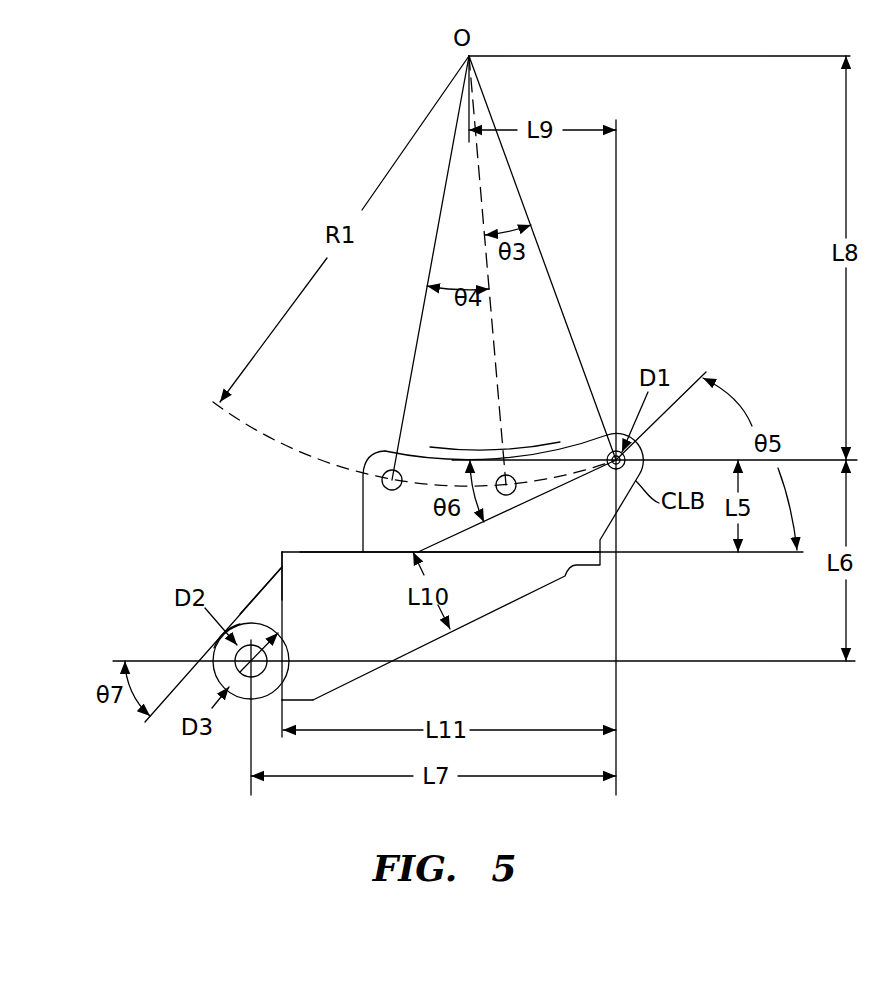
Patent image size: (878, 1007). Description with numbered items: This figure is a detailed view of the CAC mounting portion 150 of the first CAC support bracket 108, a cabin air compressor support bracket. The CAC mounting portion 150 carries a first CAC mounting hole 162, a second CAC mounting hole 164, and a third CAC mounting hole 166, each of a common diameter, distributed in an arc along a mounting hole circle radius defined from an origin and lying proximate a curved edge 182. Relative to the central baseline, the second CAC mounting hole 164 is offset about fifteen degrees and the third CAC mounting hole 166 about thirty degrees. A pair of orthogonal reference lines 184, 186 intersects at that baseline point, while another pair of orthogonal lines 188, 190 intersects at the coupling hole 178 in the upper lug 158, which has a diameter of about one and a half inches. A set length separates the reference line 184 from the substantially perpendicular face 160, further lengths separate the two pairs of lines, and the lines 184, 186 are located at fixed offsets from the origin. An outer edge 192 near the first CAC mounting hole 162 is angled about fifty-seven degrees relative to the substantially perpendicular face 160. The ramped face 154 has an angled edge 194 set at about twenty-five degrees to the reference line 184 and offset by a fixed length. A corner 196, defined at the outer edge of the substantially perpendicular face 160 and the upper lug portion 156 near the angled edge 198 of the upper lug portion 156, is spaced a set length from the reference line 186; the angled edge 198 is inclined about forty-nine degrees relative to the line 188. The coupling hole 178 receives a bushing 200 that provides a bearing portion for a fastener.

The first CAC support bracket 108 is at (439, 491).
The CAC mounting portion 150 is at (380, 456).
The ramped face 154 is at (357, 590).
The upper lug portion 156 is at (270, 608).
The upper lug 158 is at (242, 692).
The substantially perpendicular face 160 is at (308, 552).
The first CAC mounting hole 162 is at (606, 456).
The second CAC mounting hole 164 is at (497, 478).
The third CAC mounting hole 166 is at (393, 470).
The coupling hole 178 is at (214, 650).
The curved edge 182 is at (522, 452).
The reference line 184 is at (817, 460).
The reference line 186 is at (616, 178).
The reference line 188 is at (797, 678).
The reference line 190 is at (251, 790).
The outer edge 192 is at (623, 494).
The angled edge 194 is at (523, 597).
The corner 196 is at (268, 578).
The angled edge 198 is at (260, 582).
The bushing 200 is at (225, 638).